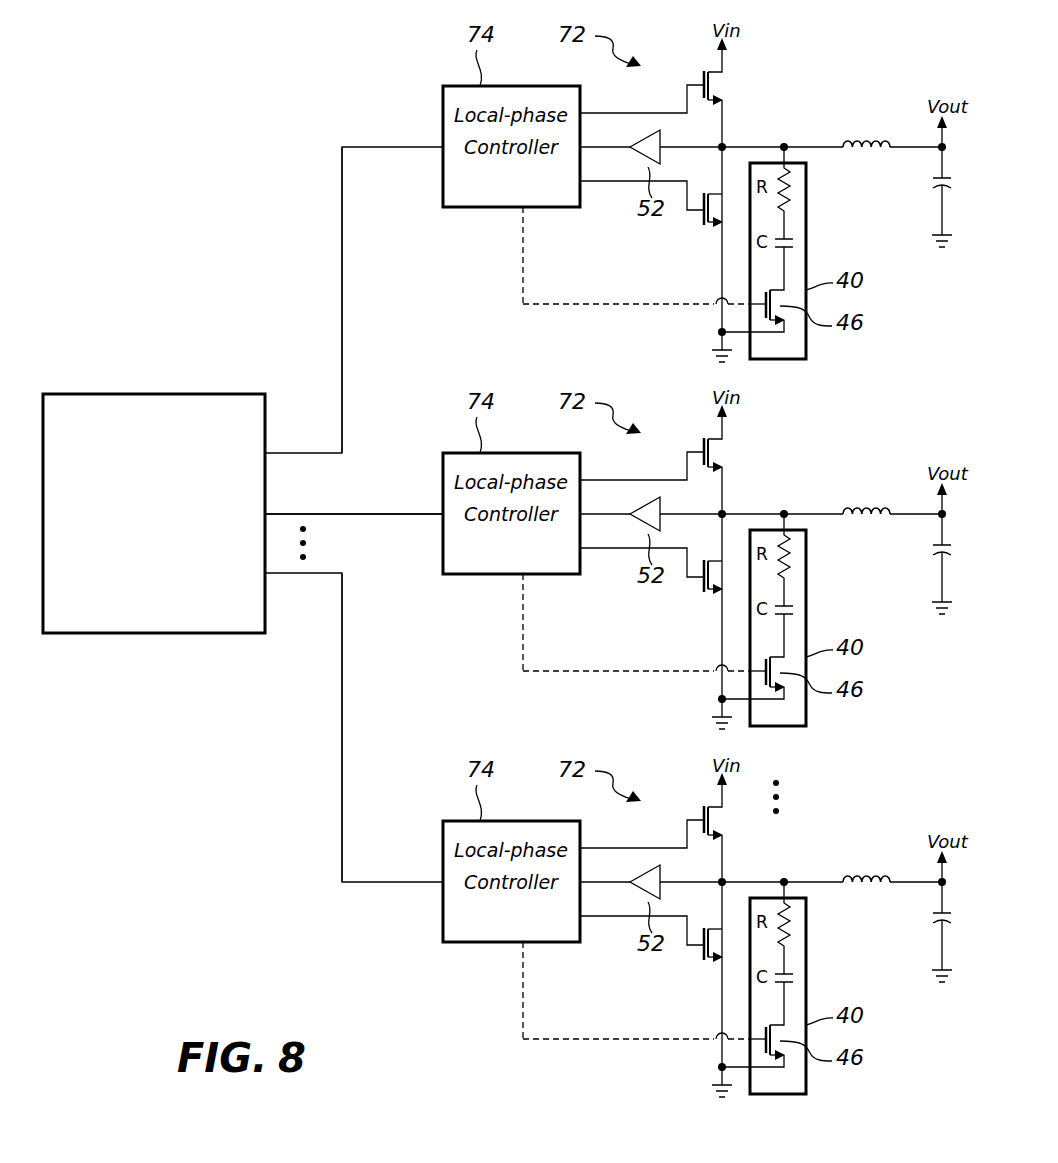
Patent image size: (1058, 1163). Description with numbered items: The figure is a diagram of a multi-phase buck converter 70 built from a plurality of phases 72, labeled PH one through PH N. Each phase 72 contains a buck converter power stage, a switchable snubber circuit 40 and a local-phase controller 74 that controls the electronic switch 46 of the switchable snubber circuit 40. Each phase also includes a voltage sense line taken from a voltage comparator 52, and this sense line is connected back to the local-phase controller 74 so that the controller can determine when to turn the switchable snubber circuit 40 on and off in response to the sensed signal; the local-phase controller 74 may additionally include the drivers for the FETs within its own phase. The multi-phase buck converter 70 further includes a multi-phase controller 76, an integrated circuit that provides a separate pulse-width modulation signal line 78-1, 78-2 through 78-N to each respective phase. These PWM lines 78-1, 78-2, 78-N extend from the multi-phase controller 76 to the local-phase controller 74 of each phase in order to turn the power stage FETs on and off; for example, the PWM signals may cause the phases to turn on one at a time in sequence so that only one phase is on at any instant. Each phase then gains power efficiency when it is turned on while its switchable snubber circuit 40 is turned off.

The multi-phase buck converter 70 is at (288, 142).
The multi-phase controller 76 is at (95, 394).
The PWM signal line 78-1 is at (342, 281).
The PWM signal line 78-2 is at (389, 513).
The PWM signal line 78-N is at (342, 731).
The local-phase controller 74 is at (595, 530).
The phase 72 is at (763, 558).
The voltage comparator 52 is at (622, 543).
The switchable snubber circuit 40 is at (793, 620).
The electronic switch 46 is at (793, 680).